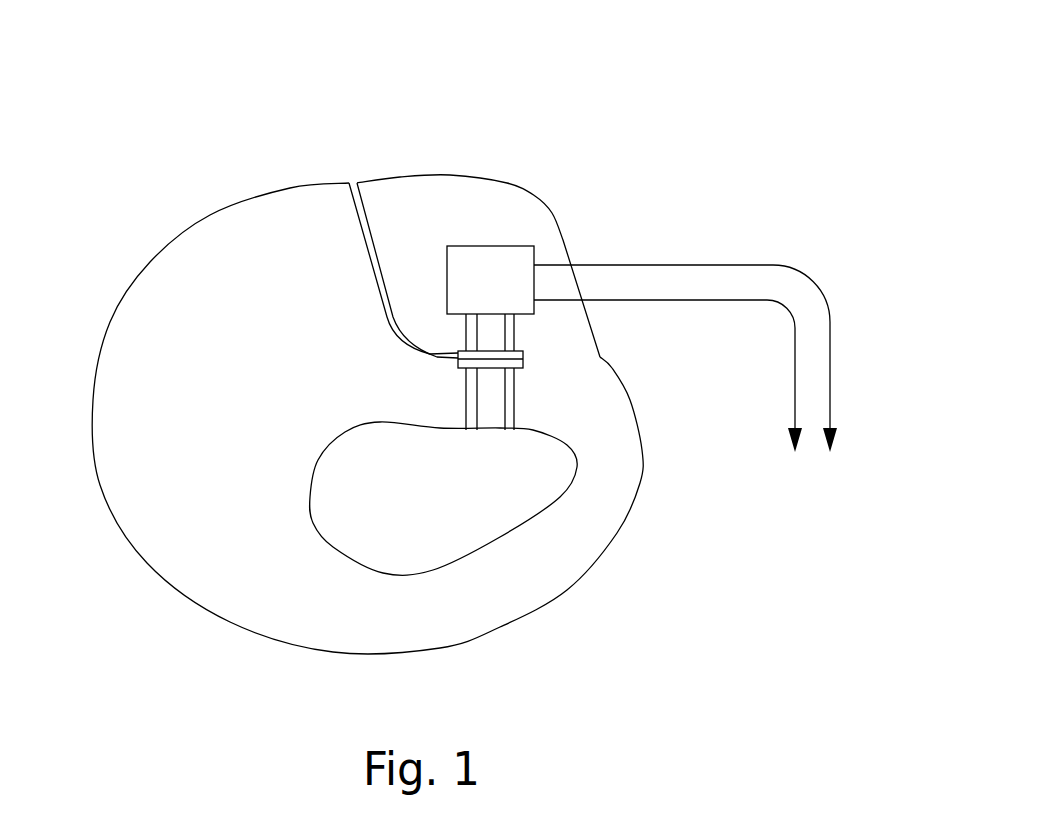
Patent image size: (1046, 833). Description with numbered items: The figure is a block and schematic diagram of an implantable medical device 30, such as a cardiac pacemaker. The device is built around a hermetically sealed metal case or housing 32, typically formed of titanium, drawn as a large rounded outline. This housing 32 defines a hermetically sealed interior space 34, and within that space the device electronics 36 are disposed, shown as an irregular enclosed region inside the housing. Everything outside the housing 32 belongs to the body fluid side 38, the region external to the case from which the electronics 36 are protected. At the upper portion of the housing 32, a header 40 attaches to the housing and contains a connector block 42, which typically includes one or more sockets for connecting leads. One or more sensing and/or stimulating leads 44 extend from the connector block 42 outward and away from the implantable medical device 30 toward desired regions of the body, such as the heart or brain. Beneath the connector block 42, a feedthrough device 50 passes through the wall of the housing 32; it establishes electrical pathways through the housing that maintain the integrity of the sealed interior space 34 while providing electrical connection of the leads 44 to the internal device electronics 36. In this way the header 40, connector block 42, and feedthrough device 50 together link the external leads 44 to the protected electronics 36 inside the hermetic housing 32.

The implantable medical device 30 is at (622, 56).
The housing 32 is at (190, 227).
The interior space 34 is at (200, 415).
The device electronics 36 is at (440, 570).
The body fluid side 38 is at (203, 135).
The header 40 is at (417, 193).
The connector block 42 is at (497, 262).
The leads 44 is at (735, 300).
The feedthrough device 50 is at (523, 358).